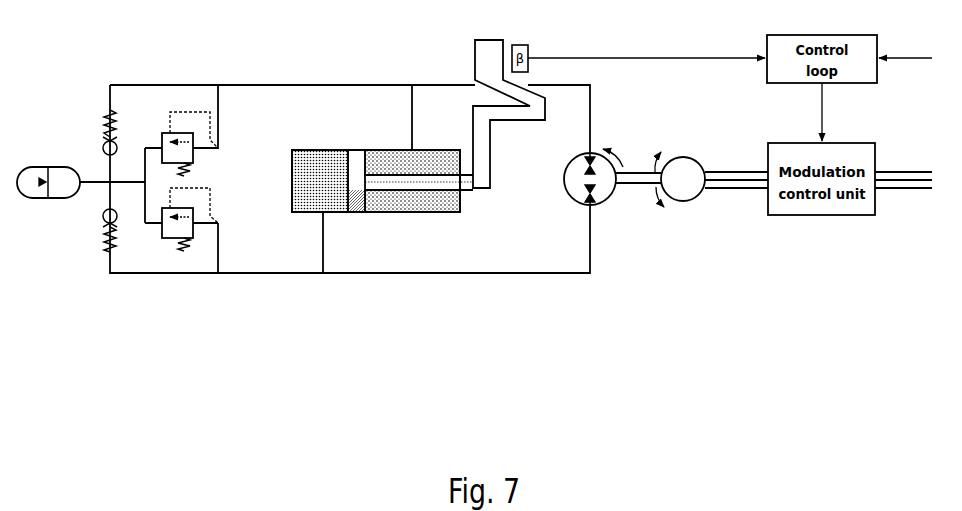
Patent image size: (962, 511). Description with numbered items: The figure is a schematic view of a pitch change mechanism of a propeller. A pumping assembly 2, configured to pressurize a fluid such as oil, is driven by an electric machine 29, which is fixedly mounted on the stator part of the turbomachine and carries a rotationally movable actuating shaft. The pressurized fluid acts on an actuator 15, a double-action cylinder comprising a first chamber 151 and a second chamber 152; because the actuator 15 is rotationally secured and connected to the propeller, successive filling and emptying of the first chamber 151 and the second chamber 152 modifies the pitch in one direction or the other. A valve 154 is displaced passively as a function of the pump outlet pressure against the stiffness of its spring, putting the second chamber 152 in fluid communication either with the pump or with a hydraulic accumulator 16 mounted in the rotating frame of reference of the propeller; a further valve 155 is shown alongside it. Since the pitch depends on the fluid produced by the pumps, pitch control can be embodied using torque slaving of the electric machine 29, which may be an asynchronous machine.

The hydraulic accumulator 16 is at (52, 201).
The pressure relief valve 155 is at (178, 108).
The valve 154 is at (168, 249).
The actuator 15 is at (408, 126).
The first chamber 151 is at (303, 149).
The second chamber 152 is at (382, 149).
The pumping assembly 2 is at (612, 208).
The electric machine 29 is at (702, 205).